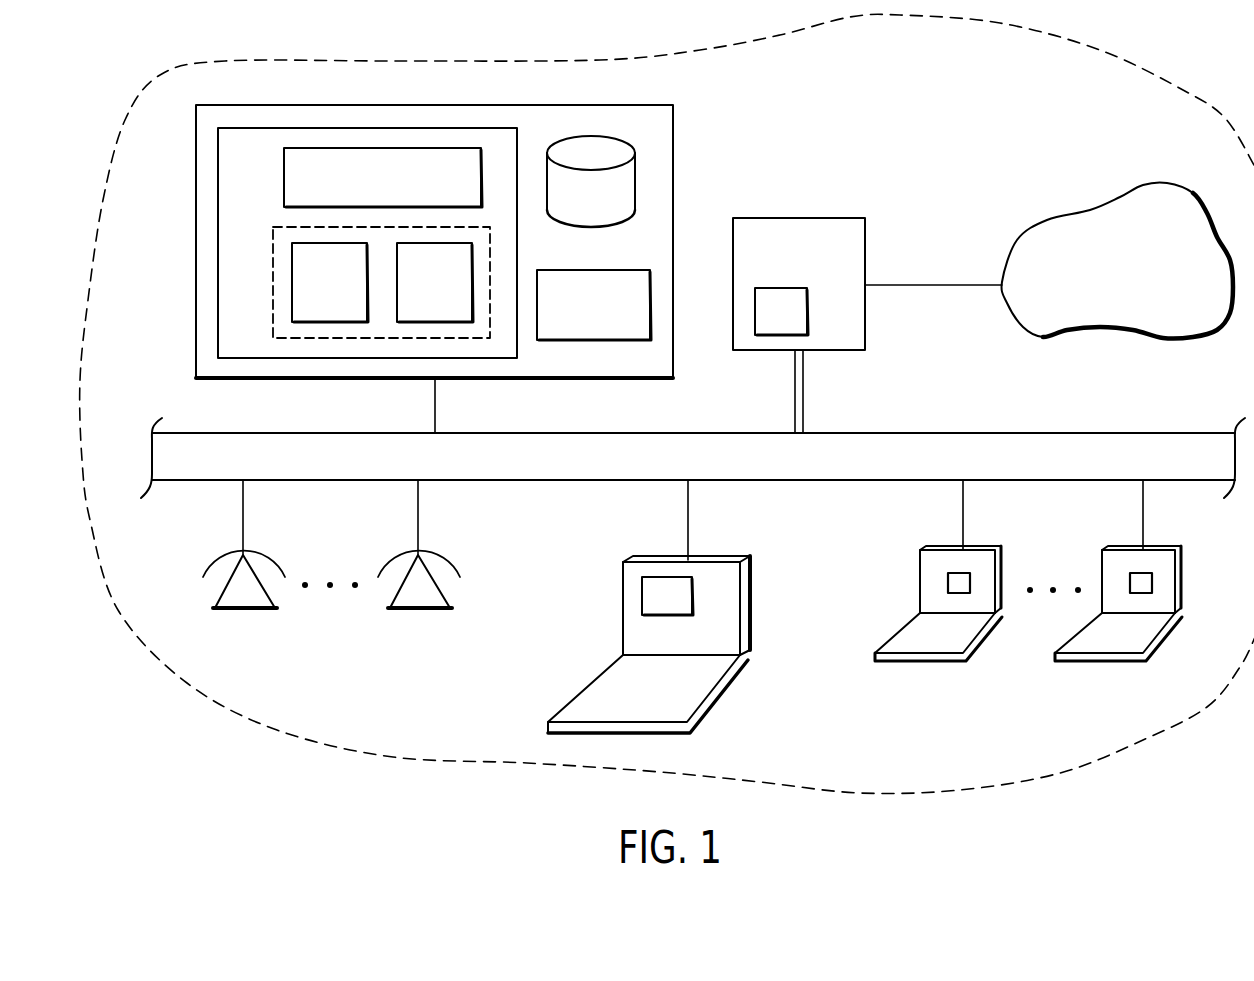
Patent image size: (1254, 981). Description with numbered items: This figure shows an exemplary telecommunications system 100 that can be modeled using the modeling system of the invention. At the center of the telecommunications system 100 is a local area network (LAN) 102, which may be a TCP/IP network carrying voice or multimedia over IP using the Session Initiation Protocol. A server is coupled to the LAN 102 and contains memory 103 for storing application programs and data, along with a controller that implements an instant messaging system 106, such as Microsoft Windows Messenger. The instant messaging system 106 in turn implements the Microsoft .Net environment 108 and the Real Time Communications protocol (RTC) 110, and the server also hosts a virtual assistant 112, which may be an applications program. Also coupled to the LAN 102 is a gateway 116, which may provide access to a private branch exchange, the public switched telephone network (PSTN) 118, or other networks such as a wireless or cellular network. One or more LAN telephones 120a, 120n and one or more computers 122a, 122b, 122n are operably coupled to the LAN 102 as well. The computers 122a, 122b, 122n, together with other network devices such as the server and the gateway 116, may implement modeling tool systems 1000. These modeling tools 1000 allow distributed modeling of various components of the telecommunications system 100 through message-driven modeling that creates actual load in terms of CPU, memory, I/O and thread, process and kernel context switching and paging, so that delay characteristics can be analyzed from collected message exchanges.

The telecommunications system 100 is at (220, 57).
The local area network (LAN) 102 is at (1146, 468).
The memory 103 is at (573, 210).
The instant messaging system 106 is at (272, 283).
The Microsoft .Net environment 108 is at (309, 310).
The Real Time Communications protocol (RTC) 110 is at (413, 310).
The virtual assistant 112 is at (359, 192).
The gateway 116 is at (778, 261).
The public switched telephone network (PSTN) 118 is at (1099, 305).
The LAN telephone 120a is at (243, 610).
The LAN telephone 120n is at (418, 610).
The computer 122a is at (720, 697).
The computer 122b is at (925, 665).
The computer 122n is at (1103, 665).
The modeling tool system 1000 is at (568, 320).